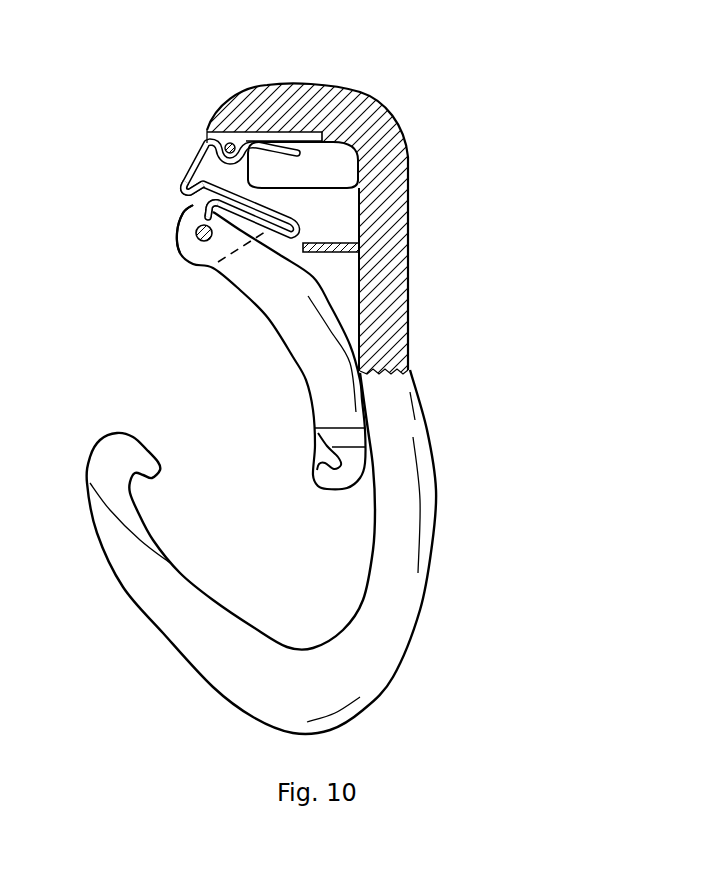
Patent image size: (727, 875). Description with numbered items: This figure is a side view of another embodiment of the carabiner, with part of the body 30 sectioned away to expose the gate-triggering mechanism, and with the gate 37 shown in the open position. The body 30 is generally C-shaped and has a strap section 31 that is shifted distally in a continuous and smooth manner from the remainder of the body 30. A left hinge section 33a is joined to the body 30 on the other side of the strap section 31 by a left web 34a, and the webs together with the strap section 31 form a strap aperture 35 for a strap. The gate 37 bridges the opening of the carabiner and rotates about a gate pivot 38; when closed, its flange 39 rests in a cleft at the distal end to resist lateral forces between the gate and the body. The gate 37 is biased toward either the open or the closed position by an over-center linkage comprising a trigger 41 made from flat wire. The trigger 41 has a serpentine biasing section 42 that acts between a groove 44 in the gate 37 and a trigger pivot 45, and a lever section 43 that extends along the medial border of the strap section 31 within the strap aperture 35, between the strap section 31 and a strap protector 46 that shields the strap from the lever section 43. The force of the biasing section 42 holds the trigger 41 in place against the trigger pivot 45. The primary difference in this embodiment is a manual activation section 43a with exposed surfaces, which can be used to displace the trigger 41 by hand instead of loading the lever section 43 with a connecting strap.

The body 30 is at (398, 476).
The strap section 31 is at (345, 89).
The left hinge section 33a is at (185, 205).
The left web 34a is at (323, 222).
The strap aperture 35 is at (392, 113).
The gate 37 is at (293, 358).
The gate pivot 38 is at (196, 233).
The flange 39 is at (330, 458).
The trigger 41 is at (193, 157).
The biasing section 42 is at (317, 160).
The lever section 43 is at (358, 92).
The manual activation section 43a is at (185, 172).
The groove 44 is at (207, 216).
The trigger pivot 45 is at (226, 146).
The strap protector 46 is at (320, 243).